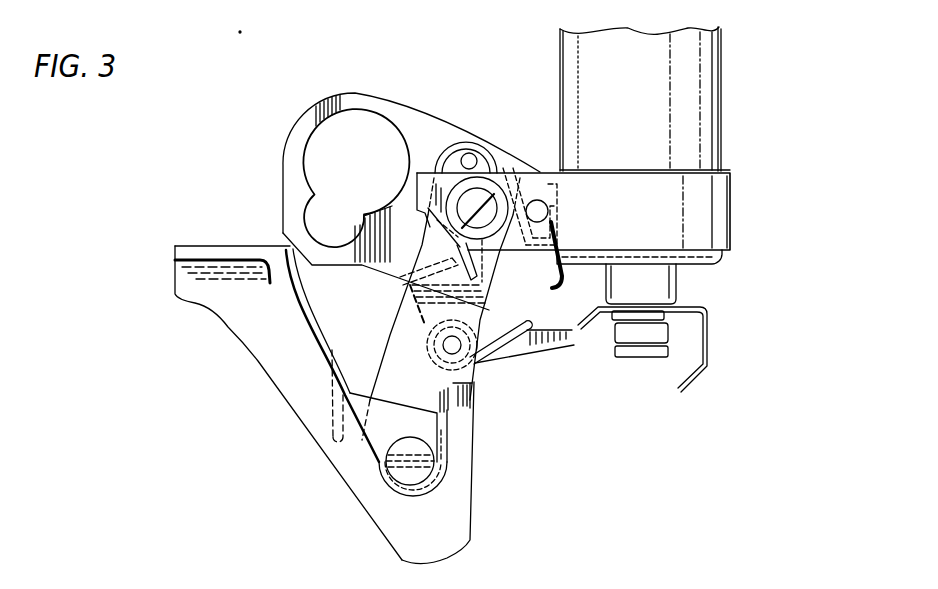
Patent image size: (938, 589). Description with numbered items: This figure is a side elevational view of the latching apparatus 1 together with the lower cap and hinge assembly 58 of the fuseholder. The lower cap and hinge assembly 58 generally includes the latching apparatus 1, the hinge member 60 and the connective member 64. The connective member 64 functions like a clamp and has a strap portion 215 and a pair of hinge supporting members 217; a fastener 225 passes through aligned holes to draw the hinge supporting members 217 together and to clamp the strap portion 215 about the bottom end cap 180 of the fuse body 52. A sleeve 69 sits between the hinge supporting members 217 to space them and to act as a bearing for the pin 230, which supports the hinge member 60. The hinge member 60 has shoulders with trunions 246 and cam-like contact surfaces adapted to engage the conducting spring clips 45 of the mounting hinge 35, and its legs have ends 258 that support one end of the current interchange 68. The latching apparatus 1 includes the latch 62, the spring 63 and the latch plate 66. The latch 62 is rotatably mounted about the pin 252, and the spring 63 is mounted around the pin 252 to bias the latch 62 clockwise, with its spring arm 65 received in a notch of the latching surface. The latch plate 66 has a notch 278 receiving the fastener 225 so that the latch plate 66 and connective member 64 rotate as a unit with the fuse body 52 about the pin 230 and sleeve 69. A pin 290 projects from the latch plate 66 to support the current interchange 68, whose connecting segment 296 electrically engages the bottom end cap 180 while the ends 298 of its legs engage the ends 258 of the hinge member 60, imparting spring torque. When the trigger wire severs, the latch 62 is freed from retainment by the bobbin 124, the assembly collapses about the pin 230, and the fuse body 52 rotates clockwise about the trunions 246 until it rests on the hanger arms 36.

The latching apparatus 1 is at (744, 316).
The mounting hinge 35 is at (267, 353).
The hanger arms 36 is at (455, 535).
The conducting spring clips 45 is at (307, 288).
The fuse body 52 is at (717, 70).
The lower cap and hinge assembly 58 is at (406, 66).
The hinge member 60 is at (478, 385).
The latch 62 is at (553, 343).
The spring 63 is at (422, 320).
The connective member 64 is at (707, 183).
The spring arm 65 is at (522, 350).
The latch plate 66 is at (400, 117).
The current interchange 68 is at (446, 148).
The sleeve 69 is at (500, 222).
The bobbin 124 is at (658, 360).
The bottom end cap 180 is at (722, 258).
The strap portion 215 is at (700, 220).
The hinge supporting members 217 is at (515, 180).
The fastener 225 is at (540, 196).
The pin 230 is at (498, 258).
The trunions 246 is at (435, 462).
The pin 252 is at (447, 355).
The ends 258 is at (447, 265).
The notch 278 is at (560, 208).
The pin 290 is at (476, 153).
The segment 296 is at (582, 268).
The ends 298 is at (392, 212).